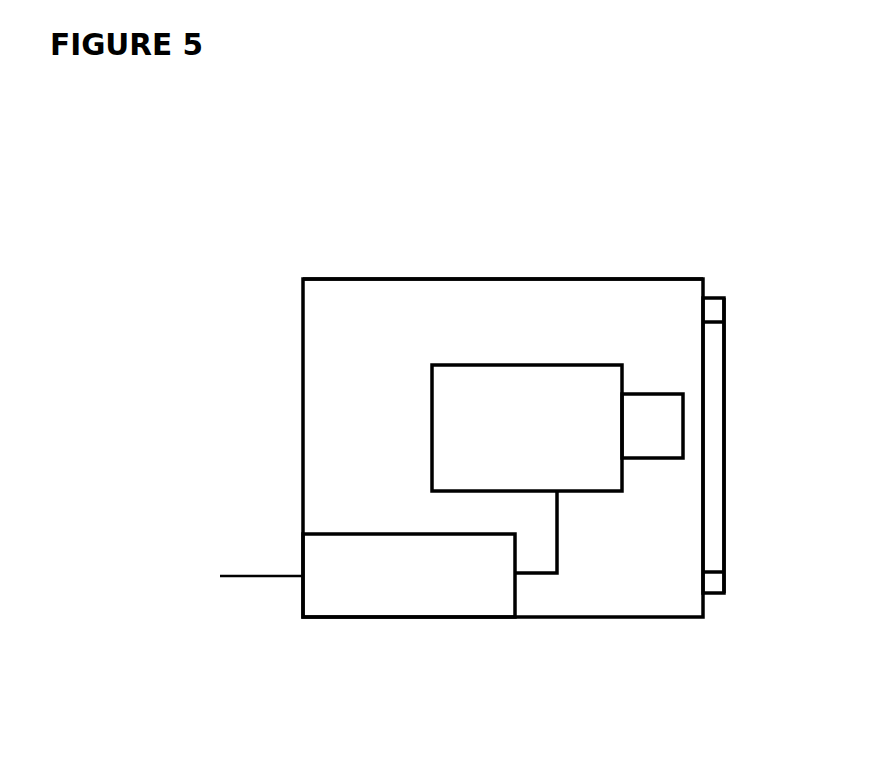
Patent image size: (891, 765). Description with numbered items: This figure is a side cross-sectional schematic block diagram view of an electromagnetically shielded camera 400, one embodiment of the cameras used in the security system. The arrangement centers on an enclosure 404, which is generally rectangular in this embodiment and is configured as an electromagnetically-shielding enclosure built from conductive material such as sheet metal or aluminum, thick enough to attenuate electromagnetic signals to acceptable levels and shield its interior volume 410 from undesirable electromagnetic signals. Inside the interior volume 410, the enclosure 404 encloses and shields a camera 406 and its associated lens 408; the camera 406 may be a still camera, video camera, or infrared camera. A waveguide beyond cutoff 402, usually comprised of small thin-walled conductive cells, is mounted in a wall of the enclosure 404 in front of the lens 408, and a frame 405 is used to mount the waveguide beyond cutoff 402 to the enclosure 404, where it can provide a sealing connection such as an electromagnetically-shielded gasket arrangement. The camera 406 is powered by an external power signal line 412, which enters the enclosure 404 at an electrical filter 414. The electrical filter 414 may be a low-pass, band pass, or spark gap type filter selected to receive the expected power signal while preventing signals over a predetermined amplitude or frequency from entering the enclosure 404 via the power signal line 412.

The electromagnetically shielded camera 400 is at (244, 633).
The waveguide beyond cutoff 402 is at (793, 445).
The enclosure 404 is at (507, 228).
The frame 405 is at (782, 398).
The camera 406 is at (539, 435).
The lens 408 is at (742, 402).
The interior volume 410 is at (378, 335).
The external power signal line 412 is at (220, 552).
The electrical filter 414 is at (379, 588).